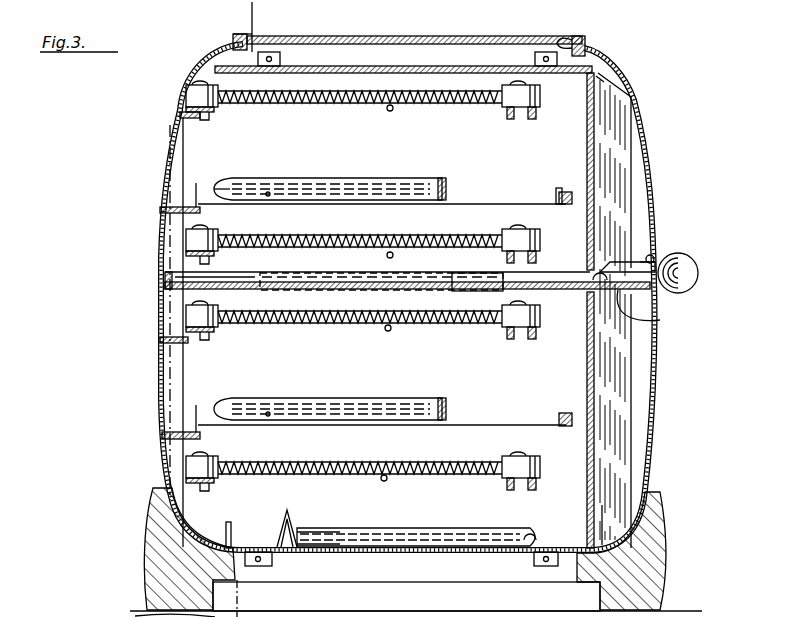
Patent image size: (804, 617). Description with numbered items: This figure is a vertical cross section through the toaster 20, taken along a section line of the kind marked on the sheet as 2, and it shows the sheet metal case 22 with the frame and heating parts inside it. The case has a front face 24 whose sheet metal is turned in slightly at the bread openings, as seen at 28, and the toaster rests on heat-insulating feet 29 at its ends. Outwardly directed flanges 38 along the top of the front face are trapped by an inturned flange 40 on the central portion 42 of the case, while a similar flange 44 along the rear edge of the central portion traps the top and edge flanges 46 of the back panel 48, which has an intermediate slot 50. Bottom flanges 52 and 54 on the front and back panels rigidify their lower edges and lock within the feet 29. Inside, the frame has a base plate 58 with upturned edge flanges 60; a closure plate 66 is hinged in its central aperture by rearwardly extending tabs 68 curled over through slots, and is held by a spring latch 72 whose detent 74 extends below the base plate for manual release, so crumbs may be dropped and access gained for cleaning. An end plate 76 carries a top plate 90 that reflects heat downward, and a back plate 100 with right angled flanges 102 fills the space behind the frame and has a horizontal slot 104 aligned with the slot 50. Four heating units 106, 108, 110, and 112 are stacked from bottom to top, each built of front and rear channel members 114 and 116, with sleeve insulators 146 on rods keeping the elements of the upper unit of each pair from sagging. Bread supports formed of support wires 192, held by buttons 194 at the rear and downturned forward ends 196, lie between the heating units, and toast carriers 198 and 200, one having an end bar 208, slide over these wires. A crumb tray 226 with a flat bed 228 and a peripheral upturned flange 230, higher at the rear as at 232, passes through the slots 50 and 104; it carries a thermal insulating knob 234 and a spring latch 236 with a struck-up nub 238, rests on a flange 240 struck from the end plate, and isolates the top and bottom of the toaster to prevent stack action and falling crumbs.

The section line 2 is at (270, 18).
The toaster 20 is at (660, 127).
The sheet metal case 22 is at (511, 36).
The front face 24 is at (163, 280).
The inturned sheet metal at the openings 28 is at (172, 178).
The feet 29 is at (155, 542).
The outwardly directed flanges 38 is at (240, 38).
The inturned flange 40 is at (234, 46).
The central portion of the toaster case 42 is at (452, 36).
The rear flange 44 is at (586, 47).
The top and edge flanges of the back panel 46 is at (568, 44).
The back panel 48 is at (658, 206).
The intermediate slot 50 is at (658, 262).
The bottom flange of the front panel 52 is at (272, 566).
The bottom flange of the back panel 54 is at (558, 560).
The base plate 58 is at (290, 508).
The upturned edge flanges 60 is at (231, 522).
The closure plate 66 is at (415, 546).
The rearwardly extending tabs 68 is at (516, 545).
The spring latch 72 is at (305, 530).
The detent 74 is at (305, 548).
The end plate 76 is at (568, 92).
The top plate 90 is at (346, 66).
The back plate 100 is at (587, 158).
The right angled flanges 102 is at (607, 103).
The horizontal slot 104 is at (564, 262).
The heating unit 106 is at (478, 460).
The heating unit 108 is at (462, 326).
The heating unit 110 is at (458, 244).
The heating unit 112 is at (468, 106).
The front channel member 114 is at (222, 332).
The rear channel member 116 is at (524, 340).
The sleeve insulators 146 is at (392, 110).
The support wires 192 is at (478, 203).
The buttons 194 is at (562, 197).
The downturned forward ends 196 is at (180, 215).
The toast carrier 198 is at (343, 396).
The toast carrier 200 is at (358, 176).
The end bar 208 is at (307, 182).
The crumb tray 226 is at (376, 262).
The flat bed 228 is at (413, 284).
The peripheral upturned flange 230 is at (325, 280).
The higher rear portion of the flange 232 is at (670, 262).
The thermal insulating knob 234 is at (700, 273).
The spring latch 236 is at (660, 320).
The struck-up nub 238 is at (653, 256).
The flange 240 is at (468, 284).